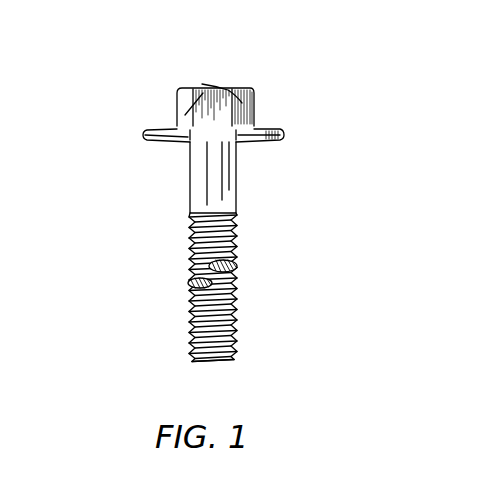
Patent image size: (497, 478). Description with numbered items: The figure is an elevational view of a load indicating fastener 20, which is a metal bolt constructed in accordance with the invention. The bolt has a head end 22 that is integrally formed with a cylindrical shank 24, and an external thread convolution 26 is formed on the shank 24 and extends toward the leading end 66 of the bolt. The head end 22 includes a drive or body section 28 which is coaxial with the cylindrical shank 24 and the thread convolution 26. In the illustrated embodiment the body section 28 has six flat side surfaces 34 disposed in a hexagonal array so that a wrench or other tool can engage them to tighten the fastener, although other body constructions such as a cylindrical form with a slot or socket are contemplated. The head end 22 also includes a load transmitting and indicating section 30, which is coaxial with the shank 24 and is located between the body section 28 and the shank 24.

The load indicating fastener 20 is at (352, 137).
The head end 22 is at (137, 102).
The cylindrical shank 24 is at (189, 189).
The external thread convolution 26 is at (222, 312).
The drive or body section 28 is at (257, 99).
The load transmitting and indicating section 30 is at (284, 136).
The flat side surfaces 34 is at (202, 84).
The leading end 66 is at (216, 362).